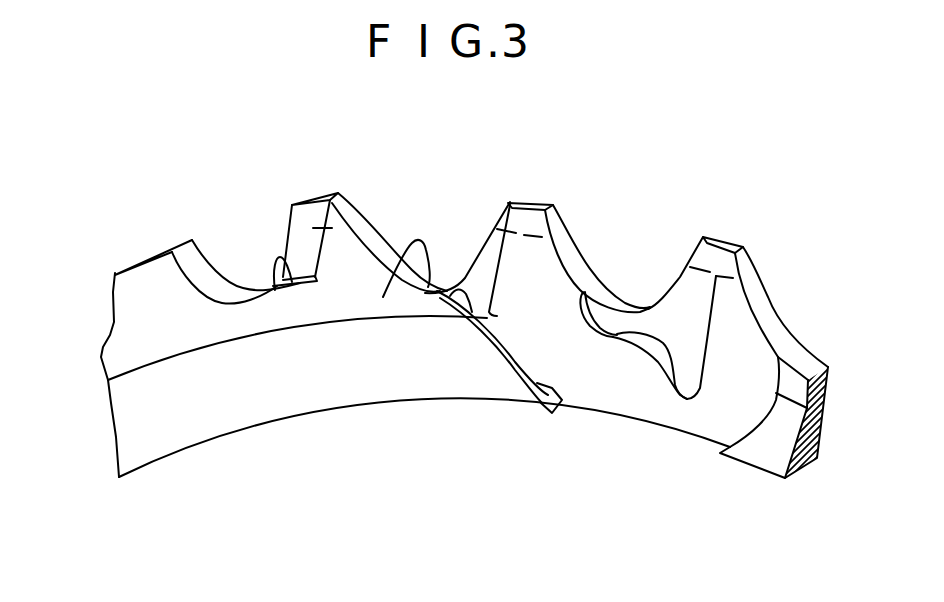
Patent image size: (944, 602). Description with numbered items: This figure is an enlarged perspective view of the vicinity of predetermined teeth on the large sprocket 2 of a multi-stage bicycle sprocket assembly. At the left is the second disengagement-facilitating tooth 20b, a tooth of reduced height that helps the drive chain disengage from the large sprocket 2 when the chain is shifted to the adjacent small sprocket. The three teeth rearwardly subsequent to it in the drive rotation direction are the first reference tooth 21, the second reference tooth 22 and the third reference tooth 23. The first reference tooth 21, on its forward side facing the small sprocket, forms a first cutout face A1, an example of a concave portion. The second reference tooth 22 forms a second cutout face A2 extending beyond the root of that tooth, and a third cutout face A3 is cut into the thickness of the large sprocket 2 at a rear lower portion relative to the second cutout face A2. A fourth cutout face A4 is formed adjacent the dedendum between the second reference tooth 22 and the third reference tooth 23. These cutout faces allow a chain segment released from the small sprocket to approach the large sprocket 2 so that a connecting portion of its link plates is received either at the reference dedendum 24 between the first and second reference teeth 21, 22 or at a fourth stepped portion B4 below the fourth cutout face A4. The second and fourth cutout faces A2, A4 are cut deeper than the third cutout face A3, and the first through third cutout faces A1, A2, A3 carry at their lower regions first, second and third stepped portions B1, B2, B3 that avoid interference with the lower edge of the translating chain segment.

The large sprocket 2 is at (303, 403).
The second disengagement-facilitating tooth 20b is at (156, 256).
The first reference tooth 21 is at (318, 197).
The second reference tooth 22 is at (535, 203).
The third reference tooth 23 is at (728, 238).
The reference dedendum 24 is at (383, 297).
The first cutout face A1 is at (294, 247).
The second cutout face A2 is at (482, 263).
The third cutout face A3 is at (542, 350).
The fourth cutout face A4 is at (654, 320).
The first stepped portion B1 is at (277, 292).
The second stepped portion B2 is at (461, 311).
The third stepped portion B3 is at (515, 237).
The fourth stepped portion B4 is at (672, 380).